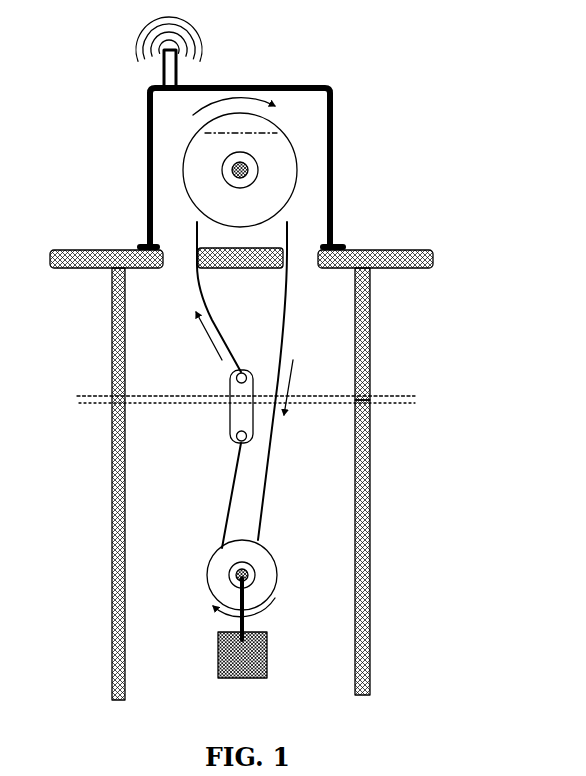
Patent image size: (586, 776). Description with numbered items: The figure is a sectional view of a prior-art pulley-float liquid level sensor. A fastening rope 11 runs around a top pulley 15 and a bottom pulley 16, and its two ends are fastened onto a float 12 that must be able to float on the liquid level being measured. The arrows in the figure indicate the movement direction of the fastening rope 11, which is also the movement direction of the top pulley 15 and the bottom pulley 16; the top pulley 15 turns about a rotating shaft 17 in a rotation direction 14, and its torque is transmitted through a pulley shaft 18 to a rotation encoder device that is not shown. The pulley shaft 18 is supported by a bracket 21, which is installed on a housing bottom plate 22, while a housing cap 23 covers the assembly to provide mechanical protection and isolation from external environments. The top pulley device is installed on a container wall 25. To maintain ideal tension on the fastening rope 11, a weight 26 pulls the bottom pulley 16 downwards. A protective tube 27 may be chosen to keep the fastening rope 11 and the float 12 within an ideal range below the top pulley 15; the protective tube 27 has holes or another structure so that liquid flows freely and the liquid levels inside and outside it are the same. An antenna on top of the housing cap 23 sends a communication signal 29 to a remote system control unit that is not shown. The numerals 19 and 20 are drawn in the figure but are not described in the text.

The fastening rope 11 is at (268, 490).
The float 12 is at (230, 417).
The rotation direction 14 is at (257, 90).
The top pulley 15 is at (298, 152).
The bottom pulley 16 is at (277, 565).
The rotating shaft 17 is at (185, 133).
The pulley shaft 18 is at (232, 162).
The water line 19 is at (103, 396).
The antenna 20 is at (160, 82).
The bracket 21 is at (192, 222).
The housing bottom plate 22 is at (393, 250).
The housing cap 23 is at (333, 118).
The container wall 25 is at (377, 268).
The weight 26 is at (267, 652).
The protective tube 27 is at (368, 345).
The communication signal 29 is at (207, 43).